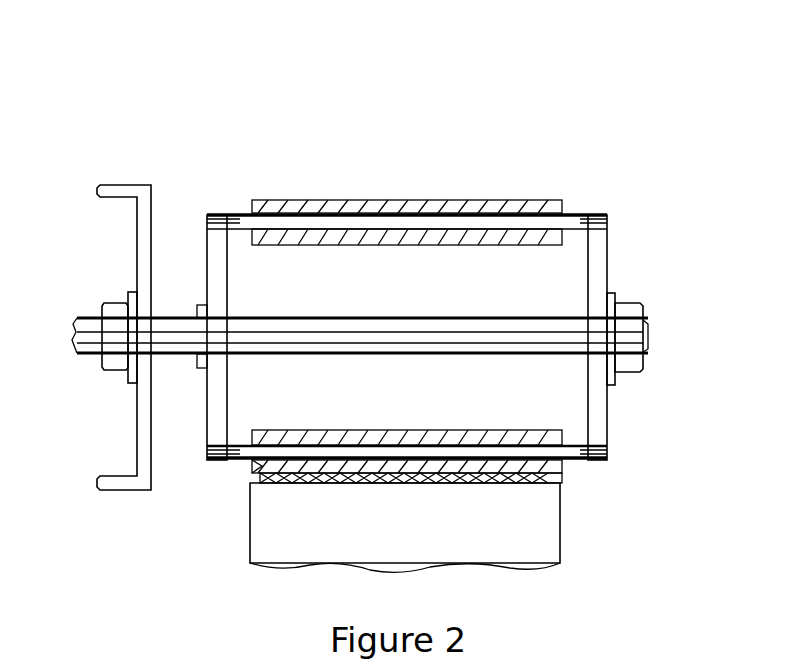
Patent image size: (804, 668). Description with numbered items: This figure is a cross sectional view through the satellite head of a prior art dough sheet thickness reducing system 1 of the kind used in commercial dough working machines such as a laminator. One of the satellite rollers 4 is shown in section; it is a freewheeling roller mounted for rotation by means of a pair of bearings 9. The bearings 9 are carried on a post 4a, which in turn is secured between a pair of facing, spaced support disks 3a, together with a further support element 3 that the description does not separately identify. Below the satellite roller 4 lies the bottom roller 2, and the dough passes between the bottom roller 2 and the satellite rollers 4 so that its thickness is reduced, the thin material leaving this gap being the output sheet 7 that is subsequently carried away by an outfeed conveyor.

The prior art system 1 is at (188, 87).
The bottom roller 2 is at (517, 545).
The left end plate 3 is at (203, 243).
The support disks 3a is at (609, 258).
The satellite rollers 4 is at (468, 202).
The post 4a is at (592, 213).
The output sheet 7 is at (330, 483).
The bearings 9 is at (253, 463).